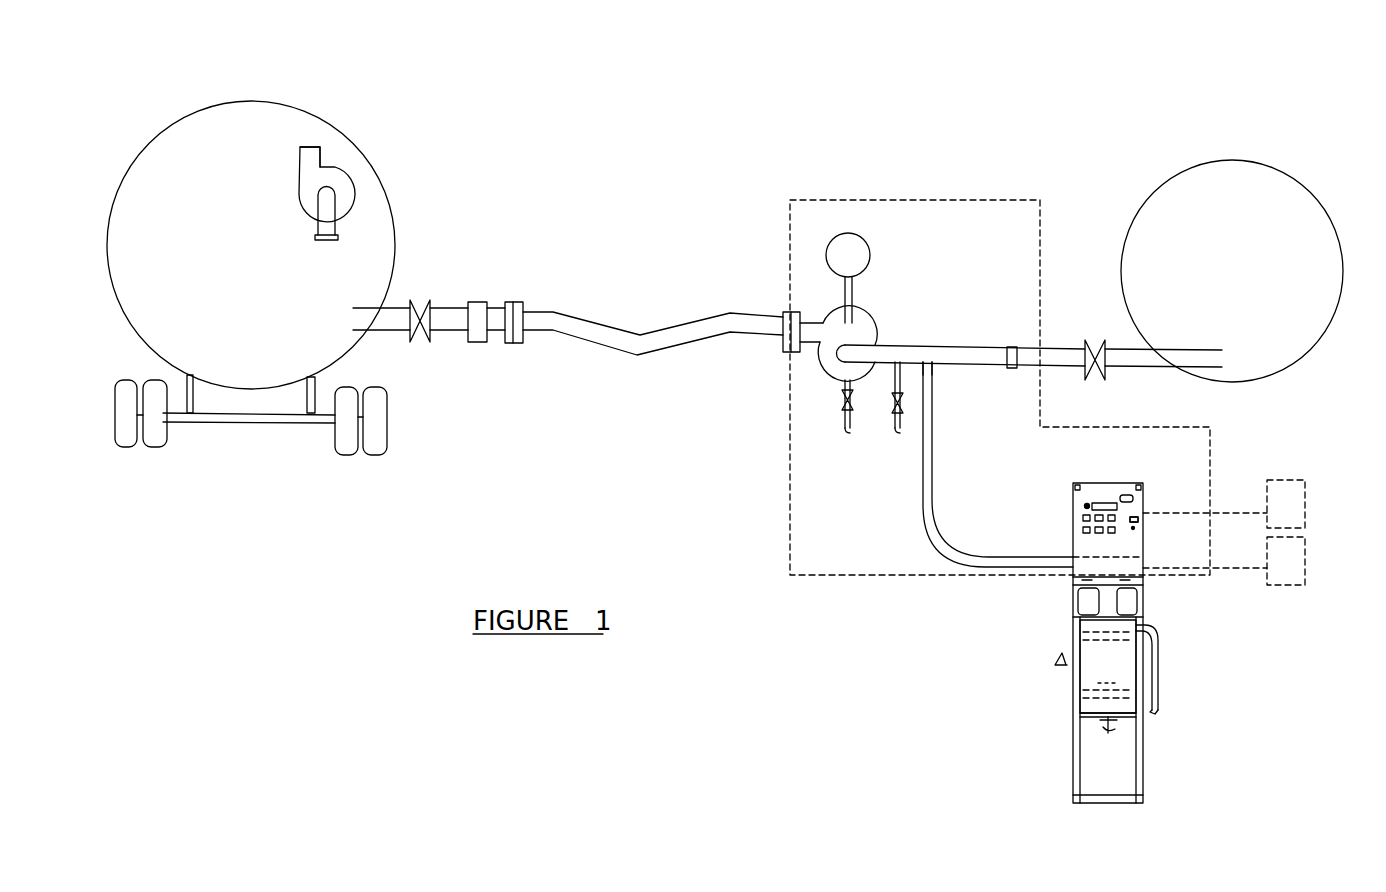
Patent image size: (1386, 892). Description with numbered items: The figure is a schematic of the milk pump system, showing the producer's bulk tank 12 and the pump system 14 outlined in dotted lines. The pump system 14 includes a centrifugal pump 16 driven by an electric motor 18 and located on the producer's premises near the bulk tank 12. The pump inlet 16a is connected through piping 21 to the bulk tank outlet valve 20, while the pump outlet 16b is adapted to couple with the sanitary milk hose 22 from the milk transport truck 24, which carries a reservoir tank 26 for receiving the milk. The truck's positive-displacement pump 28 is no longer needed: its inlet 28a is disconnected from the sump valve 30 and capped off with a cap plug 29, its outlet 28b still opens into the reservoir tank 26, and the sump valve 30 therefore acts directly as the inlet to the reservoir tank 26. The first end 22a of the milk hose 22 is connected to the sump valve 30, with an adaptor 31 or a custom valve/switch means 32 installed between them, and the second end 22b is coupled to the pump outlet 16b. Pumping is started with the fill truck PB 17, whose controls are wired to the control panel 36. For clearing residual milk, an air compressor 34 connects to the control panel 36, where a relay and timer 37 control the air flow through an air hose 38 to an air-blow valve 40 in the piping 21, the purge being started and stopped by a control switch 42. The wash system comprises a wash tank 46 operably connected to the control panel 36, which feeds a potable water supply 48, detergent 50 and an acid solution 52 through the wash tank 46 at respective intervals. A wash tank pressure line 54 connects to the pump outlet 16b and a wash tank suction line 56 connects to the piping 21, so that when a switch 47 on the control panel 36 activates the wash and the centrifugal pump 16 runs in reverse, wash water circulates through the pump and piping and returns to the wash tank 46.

The bulk tank 12 is at (1208, 205).
The pump system 14 is at (893, 200).
The centrifugal pump 16 is at (842, 370).
The pump inlet 16a is at (850, 377).
The pump outlet 16b is at (803, 325).
The fill truck PB 17 is at (1153, 537).
The electric motor 18 is at (857, 248).
The bulk tank outlet valve 20 is at (1095, 383).
The piping 21 is at (960, 343).
The sanitary milk hose 22 is at (642, 342).
The first end of milk hose 22a is at (523, 302).
The second end of milk hose 22b is at (780, 352).
The milk transport truck 24 is at (262, 101).
The reservoir tank 26 is at (155, 165).
The positive-displacement pump 28 is at (312, 173).
The inlet of positive-displacement pump 28a is at (325, 218).
The outlet of positive-displacement pump 28b is at (310, 145).
The cap plug 29 is at (330, 238).
The sump valve 30 is at (422, 343).
The adaptor 31 is at (480, 386).
The valve/switch means 32 is at (478, 343).
The air compressor 34 is at (1287, 508).
The control panel 36 is at (1078, 492).
The relay and timer 37 is at (1085, 505).
The air hose 38 is at (933, 470).
The air-blow valve 40 is at (933, 372).
The control switch 42 is at (1093, 520).
The wash tank 46 is at (1107, 663).
The switch 47 is at (1162, 536).
The potable water supply 48 is at (1293, 557).
The detergent 50 is at (1090, 603).
The acid solution 52 is at (1127, 603).
The wash tank pressure line 54 is at (1155, 678).
The wash tank suction line 56 is at (1115, 728).